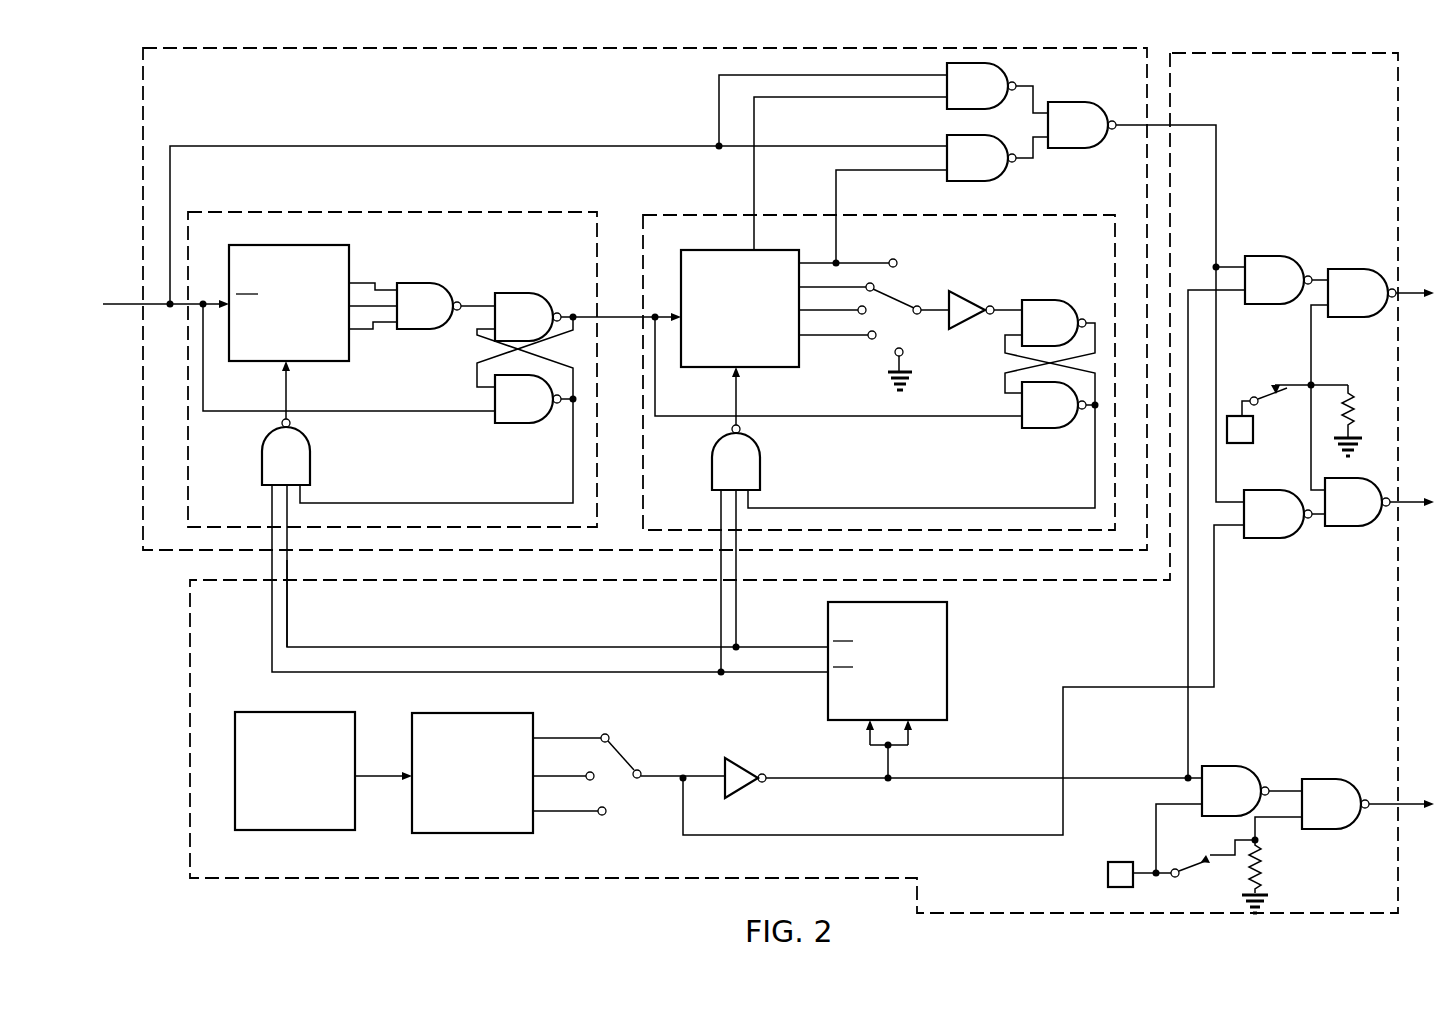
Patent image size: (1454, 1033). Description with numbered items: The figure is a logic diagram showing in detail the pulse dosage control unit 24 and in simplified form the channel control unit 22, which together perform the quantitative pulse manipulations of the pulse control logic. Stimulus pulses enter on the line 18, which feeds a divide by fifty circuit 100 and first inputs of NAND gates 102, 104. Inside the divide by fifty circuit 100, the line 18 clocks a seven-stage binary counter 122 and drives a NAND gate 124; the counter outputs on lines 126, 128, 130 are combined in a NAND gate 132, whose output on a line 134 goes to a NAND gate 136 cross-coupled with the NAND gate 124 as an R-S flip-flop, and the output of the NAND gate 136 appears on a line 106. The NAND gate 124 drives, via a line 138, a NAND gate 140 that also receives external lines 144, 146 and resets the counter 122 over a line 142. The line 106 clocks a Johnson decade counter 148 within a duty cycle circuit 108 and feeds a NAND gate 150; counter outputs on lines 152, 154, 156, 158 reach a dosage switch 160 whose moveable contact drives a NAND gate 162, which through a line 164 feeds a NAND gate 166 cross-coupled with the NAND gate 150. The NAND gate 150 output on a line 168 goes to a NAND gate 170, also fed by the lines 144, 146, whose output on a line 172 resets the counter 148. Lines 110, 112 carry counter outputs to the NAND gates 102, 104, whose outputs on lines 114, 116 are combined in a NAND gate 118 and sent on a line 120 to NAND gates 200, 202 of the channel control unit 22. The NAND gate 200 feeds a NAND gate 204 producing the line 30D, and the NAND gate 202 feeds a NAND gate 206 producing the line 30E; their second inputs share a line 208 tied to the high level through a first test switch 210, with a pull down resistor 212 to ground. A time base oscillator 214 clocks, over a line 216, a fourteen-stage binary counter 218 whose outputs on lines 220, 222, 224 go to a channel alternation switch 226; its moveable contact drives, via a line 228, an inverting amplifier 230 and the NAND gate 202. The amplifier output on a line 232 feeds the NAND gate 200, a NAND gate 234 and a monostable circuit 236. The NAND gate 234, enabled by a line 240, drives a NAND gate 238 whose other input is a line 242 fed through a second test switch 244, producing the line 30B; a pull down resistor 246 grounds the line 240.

The pulse dosage control unit 24 is at (645, 299).
The channel control unit 22 is at (794, 483).
The line 18 is at (120, 282).
The divide by 50 circuit 100 is at (304, 210).
The duty cycle circuit 108 is at (724, 211).
The 7-stage binary counter 122 is at (255, 245).
The line 126 is at (372, 283).
The line 128 is at (370, 311).
The line 130 is at (382, 329).
The NAND gate 132 is at (429, 306).
The line 134 is at (480, 302).
The NAND gate 136 is at (527, 340).
The NAND gate 124 is at (390, 363).
The line 106 is at (622, 313).
The NAND gate 140 is at (286, 452).
The line 142 is at (286, 384).
The line 144 is at (272, 505).
The line 138 is at (509, 503).
The line 146 is at (288, 604).
The 5-stage Johnson decade counter 148 is at (696, 250).
The line 110 is at (754, 122).
The line 112 is at (836, 184).
The NAND gate 102 is at (981, 86).
The NAND gate 104 is at (981, 158).
The line 114 is at (1036, 97).
The line 116 is at (1033, 163).
The NAND gate 118 is at (1082, 125).
The line 120 is at (1190, 125).
The line 152 is at (838, 264).
The line 154 is at (810, 286).
The line 156 is at (824, 311).
The line 158 is at (847, 336).
The dosage switch 160 is at (907, 300).
The NAND gate 162 is at (952, 297).
The line 164 is at (1005, 307).
The NAND gate 166 is at (1050, 346).
The NAND gate 150 is at (1052, 381).
The line 172 is at (736, 388).
The NAND gate 170 is at (736, 521).
The line 168 is at (1012, 508).
The NAND gate 200 is at (1257, 519).
The NAND gate 204 is at (1362, 293).
The line 30D is at (1404, 286).
The line 208 is at (1311, 356).
The first test switch 210 is at (1256, 397).
The pull down resistor 212 is at (1352, 404).
The NAND gate 202 is at (1003, 662).
The NAND gate 206 is at (1357, 502).
The line 30E is at (1404, 497).
The monostable circuit 236 is at (948, 669).
The time base oscillator 214 is at (262, 712).
The line 216 is at (374, 772).
The 14-stage binary counter 218 is at (431, 713).
The line 220 is at (545, 736).
The line 222 is at (543, 776).
The line 224 is at (568, 814).
The channel alternation switch 226 is at (625, 766).
The line 228 is at (694, 774).
The inverting amplifier 230 is at (744, 773).
The line 232 is at (837, 776).
The NAND gate 234 is at (1252, 791).
The NAND gate 238 is at (1335, 804).
The line 30B is at (1396, 806).
The line 240 is at (1156, 826).
The line 242 is at (1267, 840).
The second test switch 244 is at (1201, 876).
The pull down resistor 246 is at (1271, 878).